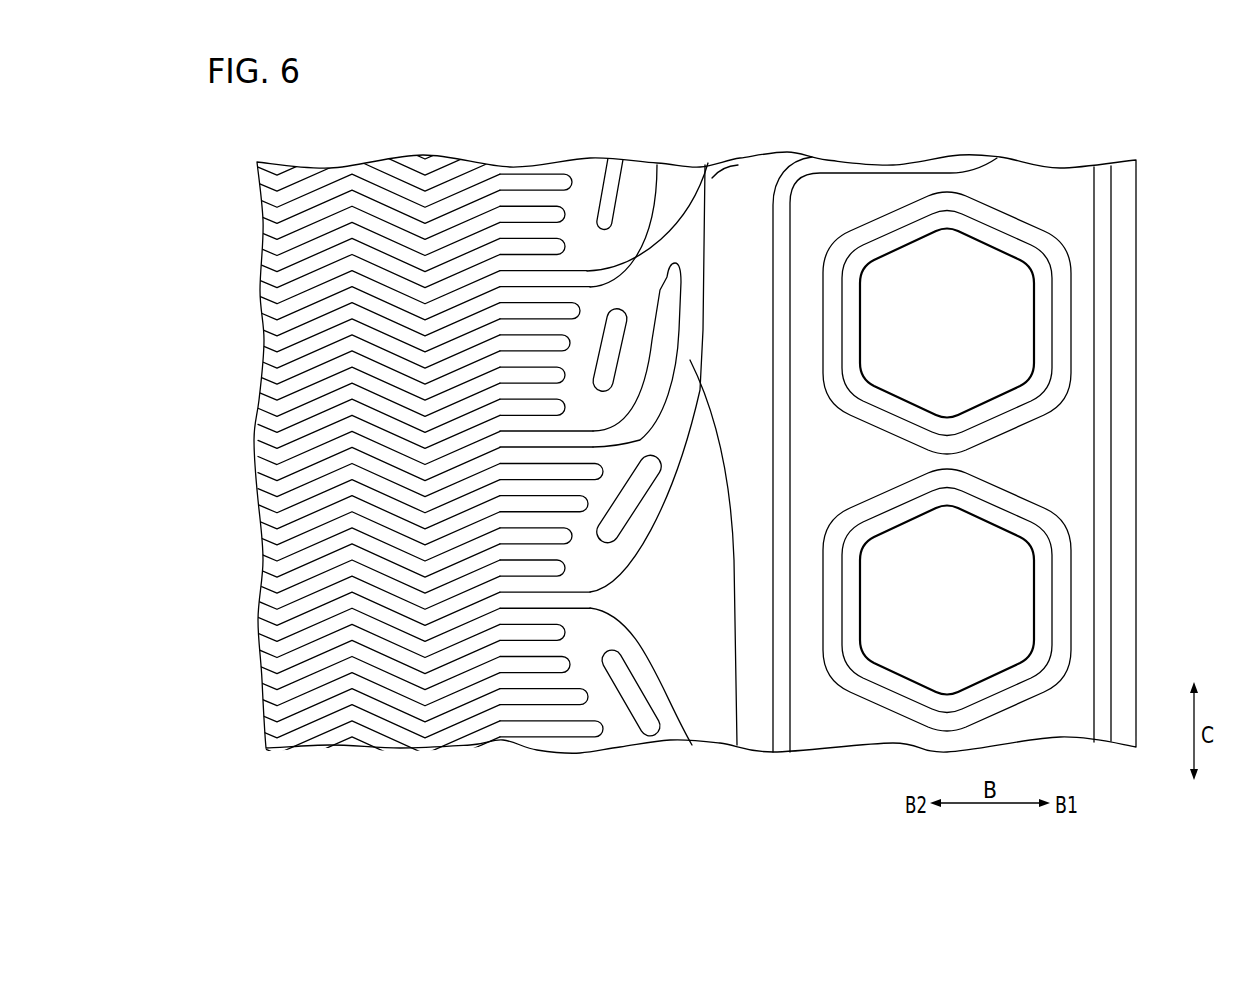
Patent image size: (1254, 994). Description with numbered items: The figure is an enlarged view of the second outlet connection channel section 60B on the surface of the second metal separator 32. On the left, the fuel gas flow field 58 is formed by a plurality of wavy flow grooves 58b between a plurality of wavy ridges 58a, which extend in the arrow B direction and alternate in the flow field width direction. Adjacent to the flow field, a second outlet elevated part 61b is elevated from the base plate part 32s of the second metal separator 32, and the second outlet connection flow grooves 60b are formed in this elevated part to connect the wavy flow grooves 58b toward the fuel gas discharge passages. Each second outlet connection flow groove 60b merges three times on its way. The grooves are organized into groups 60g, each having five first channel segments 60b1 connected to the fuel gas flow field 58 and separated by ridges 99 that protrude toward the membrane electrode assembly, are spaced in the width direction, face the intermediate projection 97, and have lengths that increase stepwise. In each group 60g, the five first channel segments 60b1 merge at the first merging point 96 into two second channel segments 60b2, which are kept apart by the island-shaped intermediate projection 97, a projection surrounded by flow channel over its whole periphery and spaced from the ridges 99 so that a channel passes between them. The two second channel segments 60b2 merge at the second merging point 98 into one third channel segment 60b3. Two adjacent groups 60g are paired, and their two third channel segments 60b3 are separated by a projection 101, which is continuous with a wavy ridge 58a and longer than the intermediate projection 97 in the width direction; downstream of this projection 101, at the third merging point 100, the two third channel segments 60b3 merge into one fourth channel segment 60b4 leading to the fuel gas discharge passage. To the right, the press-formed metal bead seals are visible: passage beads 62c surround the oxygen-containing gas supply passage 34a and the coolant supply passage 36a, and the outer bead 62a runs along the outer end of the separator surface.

The second metal separator 32 is at (970, 92).
The base plate part 32s is at (862, 198).
The oxygen-containing gas supply passage 34a is at (1008, 605).
The coolant supply passage 36a is at (998, 315).
The fuel gas flow field 58 is at (379, 425).
The wavy ridge 58a is at (397, 232).
The wavy flow groove 58b is at (430, 230).
The second outlet connection flow groove 60b is at (566, 293).
The second outlet connection channel section 60B is at (597, 162).
The first channel segment 60b1 is at (530, 293).
The second channel segment 60b2 is at (615, 292).
The third channel segment 60b3 is at (667, 252).
The fourth channel segment 60b4 is at (725, 178).
The group 60g is at (480, 361).
The second outlet elevated part 61b is at (778, 163).
The outer bead 62a is at (1105, 417).
The passage bead 62c is at (1053, 265).
The first merging point 96 is at (607, 395).
The intermediate projection 97 is at (628, 322).
The second merging point 98 is at (657, 165).
The ridge 99 is at (517, 310).
The third merging point 100 is at (698, 212).
The projection 101 is at (667, 326).